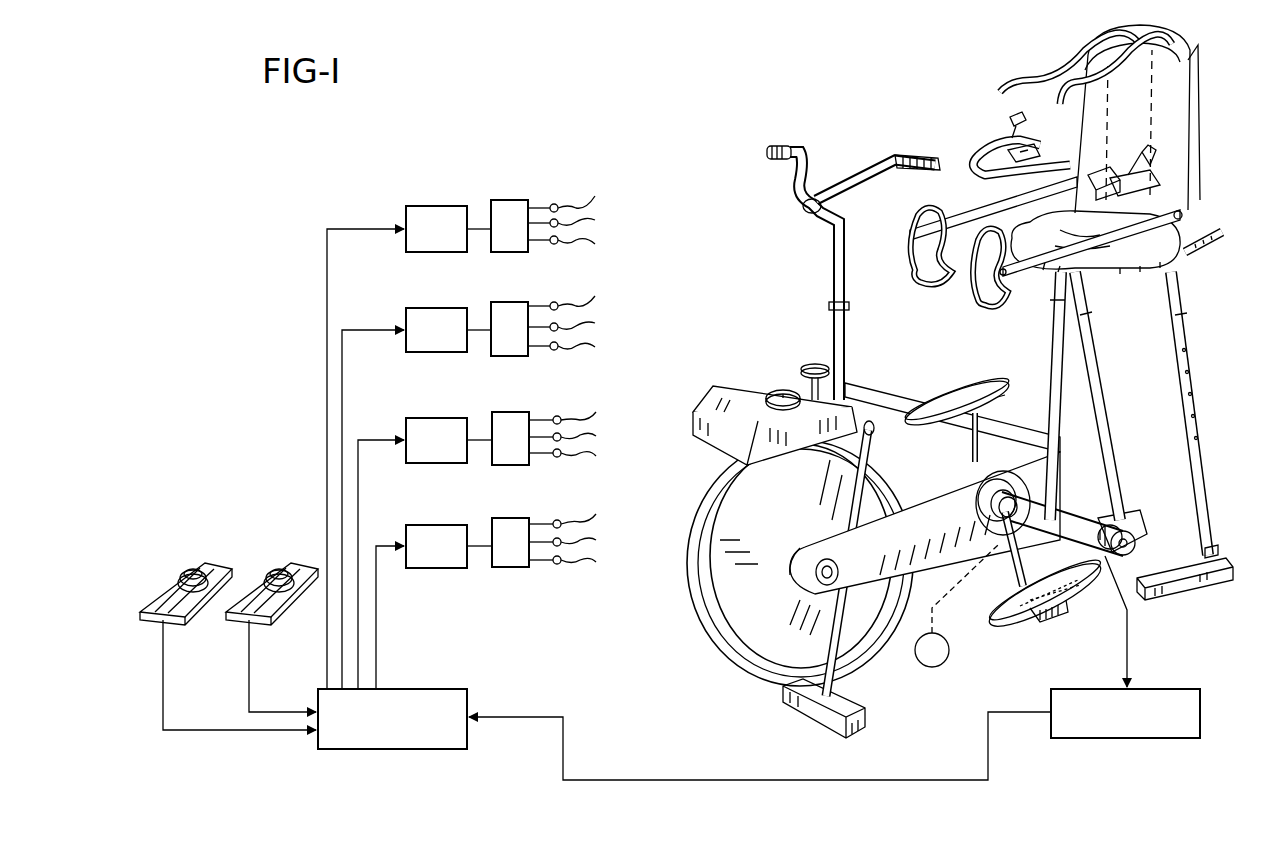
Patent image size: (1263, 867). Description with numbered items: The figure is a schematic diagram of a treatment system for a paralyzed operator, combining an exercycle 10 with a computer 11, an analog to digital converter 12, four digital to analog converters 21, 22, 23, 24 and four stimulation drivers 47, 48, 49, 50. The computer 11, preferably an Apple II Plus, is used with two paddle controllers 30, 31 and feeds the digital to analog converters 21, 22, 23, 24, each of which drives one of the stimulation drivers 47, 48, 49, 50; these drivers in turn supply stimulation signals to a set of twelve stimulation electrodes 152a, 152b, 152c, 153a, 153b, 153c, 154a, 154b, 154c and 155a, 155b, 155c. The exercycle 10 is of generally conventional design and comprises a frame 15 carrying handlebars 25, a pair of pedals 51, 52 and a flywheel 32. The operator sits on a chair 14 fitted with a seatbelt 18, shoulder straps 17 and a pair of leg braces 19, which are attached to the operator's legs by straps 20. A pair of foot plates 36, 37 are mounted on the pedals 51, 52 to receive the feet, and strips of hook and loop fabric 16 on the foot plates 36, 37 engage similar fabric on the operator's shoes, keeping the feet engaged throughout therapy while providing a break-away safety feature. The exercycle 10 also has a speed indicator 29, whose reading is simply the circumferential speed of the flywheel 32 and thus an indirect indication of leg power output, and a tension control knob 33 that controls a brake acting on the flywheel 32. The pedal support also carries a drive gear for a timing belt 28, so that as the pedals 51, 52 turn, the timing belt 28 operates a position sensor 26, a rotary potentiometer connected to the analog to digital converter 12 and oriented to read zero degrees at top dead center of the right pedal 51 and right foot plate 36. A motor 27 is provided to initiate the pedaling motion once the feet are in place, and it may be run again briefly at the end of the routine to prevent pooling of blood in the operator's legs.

The exercycle 10 is at (732, 124).
The computer 11 is at (440, 692).
The analog to digital converter 12 is at (1160, 690).
The chair 14 is at (1196, 104).
The frame 15 is at (858, 400).
The strips of hook and loop fabric 16 is at (978, 404).
The shoulder straps 17 is at (1026, 82).
The seatbelt 18 is at (1122, 168).
The leg braces 19 is at (960, 226).
The straps 20 is at (988, 298).
The digital to analog converter 21 is at (426, 525).
The digital to analog converter 22 is at (426, 308).
The digital to analog converter 23 is at (430, 418).
The digital to analog converter 24 is at (432, 206).
The handlebars 25 is at (792, 172).
The position sensor 26 is at (1118, 514).
The motor 27 is at (916, 658).
The timing belt 28 is at (1064, 510).
The speed indicator 29 is at (780, 394).
The paddle controller 30 is at (215, 574).
The paddle controller 31 is at (302, 572).
The flywheel 32 is at (706, 512).
The tension control knob 33 is at (814, 364).
The foot plate 36 is at (906, 420).
The foot plate 37 is at (1010, 616).
The stimulation driver 47 is at (512, 518).
The stimulation driver 48 is at (510, 306).
The stimulation driver 49 is at (512, 412).
The stimulation driver 50 is at (508, 200).
The pedal 51 is at (988, 414).
The pedal 52 is at (1072, 604).
The stimulation electrode 152a is at (589, 560).
The stimulation electrode 152b is at (590, 515).
The stimulation electrode 152c is at (589, 540).
The stimulation electrode 153a is at (589, 455).
The stimulation electrode 153b is at (590, 413).
The stimulation electrode 153c is at (589, 435).
The stimulation electrode 154a is at (589, 345).
The stimulation electrode 154b is at (589, 295).
The stimulation electrode 154c is at (588, 321).
The stimulation electrode 155a is at (589, 242).
The stimulation electrode 155b is at (589, 195).
The stimulation electrode 155c is at (588, 217).